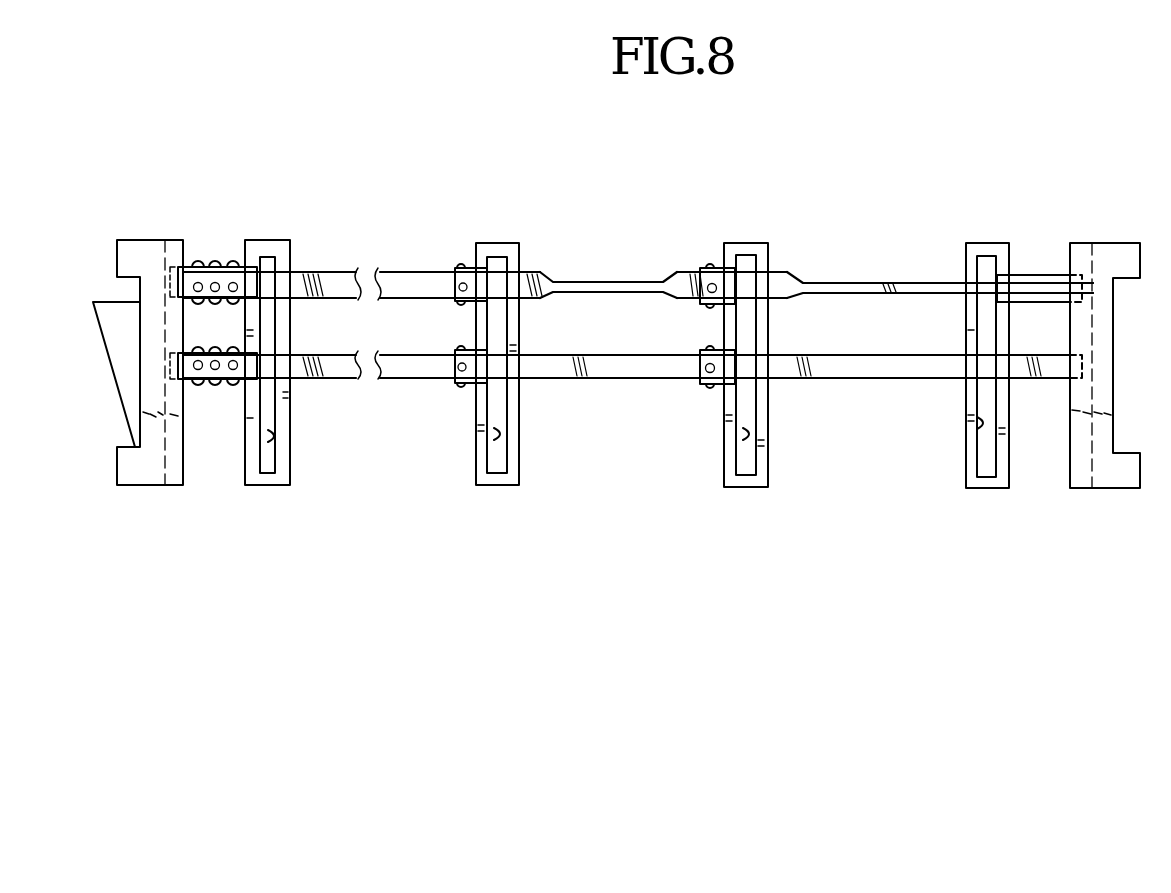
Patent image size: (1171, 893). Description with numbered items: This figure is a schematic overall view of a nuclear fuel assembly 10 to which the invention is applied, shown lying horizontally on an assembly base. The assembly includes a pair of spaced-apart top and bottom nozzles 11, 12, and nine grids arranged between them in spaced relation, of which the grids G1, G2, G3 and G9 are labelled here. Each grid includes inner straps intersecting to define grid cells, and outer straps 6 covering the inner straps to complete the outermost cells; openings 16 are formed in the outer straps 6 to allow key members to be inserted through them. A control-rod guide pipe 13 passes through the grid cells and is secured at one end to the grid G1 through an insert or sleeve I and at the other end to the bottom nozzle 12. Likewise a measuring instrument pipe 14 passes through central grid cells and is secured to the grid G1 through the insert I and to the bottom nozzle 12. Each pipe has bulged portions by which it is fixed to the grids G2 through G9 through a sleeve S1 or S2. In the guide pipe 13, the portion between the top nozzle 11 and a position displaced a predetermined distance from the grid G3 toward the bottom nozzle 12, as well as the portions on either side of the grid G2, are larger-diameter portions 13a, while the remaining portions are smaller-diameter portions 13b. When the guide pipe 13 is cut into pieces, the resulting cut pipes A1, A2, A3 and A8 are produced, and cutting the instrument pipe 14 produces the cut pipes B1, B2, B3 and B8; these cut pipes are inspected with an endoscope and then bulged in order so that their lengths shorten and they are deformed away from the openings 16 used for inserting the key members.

The top nozzle 11 is at (148, 242).
The bottom nozzle 12 is at (1107, 245).
The grid G9 is at (268, 242).
The grid G3 is at (500, 245).
The grid G2 is at (740, 245).
The grid G1 is at (990, 245).
The cut pipe A8 is at (322, 272).
The cut pipe A3 is at (415, 299).
The cut pipe A2 is at (617, 293).
The cut pipe A1 is at (888, 293).
The control-rod guide pipe 13 is at (850, 275).
The larger-diameter portion 13a is at (408, 272).
The smaller-diameter portion 13b is at (598, 282).
The nuclear fuel assembly 10 is at (766, 228).
The insert I is at (1033, 275).
The cut pipe B8 is at (322, 380).
The cut pipe B3 is at (408, 380).
The cut pipe B2 is at (600, 380).
The cut pipe B1 is at (895, 380).
The measuring instrument pipe 14 is at (835, 380).
The sleeve S2 is at (222, 262).
The sleeve S1 is at (473, 268).
The opening 16 is at (275, 440).
The outer strap 6 is at (283, 487).